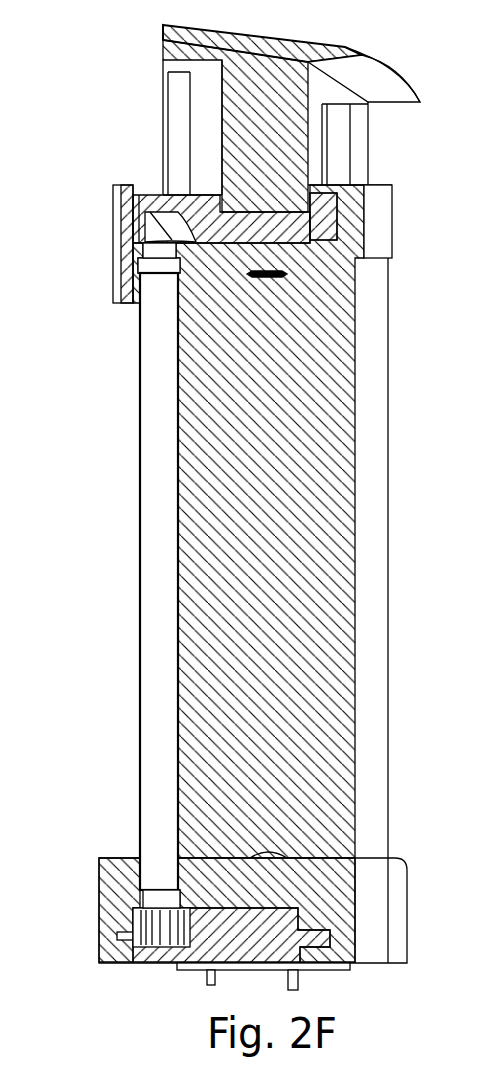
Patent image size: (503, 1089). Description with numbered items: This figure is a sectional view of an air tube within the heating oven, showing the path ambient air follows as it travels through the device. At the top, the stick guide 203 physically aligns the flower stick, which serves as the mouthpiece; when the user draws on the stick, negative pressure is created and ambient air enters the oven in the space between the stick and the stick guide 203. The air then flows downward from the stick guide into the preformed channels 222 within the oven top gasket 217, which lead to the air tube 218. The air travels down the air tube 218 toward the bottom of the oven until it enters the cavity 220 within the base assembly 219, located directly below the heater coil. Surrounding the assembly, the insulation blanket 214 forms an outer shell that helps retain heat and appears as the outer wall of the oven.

The stick guide 203 is at (372, 83).
The insulation blanket 214 is at (388, 758).
The oven top gasket 217 is at (392, 232).
The air tube 218 is at (150, 493).
The base assembly 219 is at (99, 925).
The cavity 220 is at (162, 933).
The preformed channels 222 is at (148, 196).